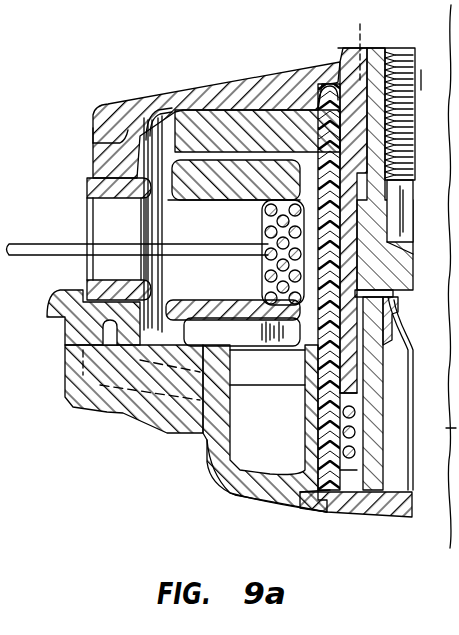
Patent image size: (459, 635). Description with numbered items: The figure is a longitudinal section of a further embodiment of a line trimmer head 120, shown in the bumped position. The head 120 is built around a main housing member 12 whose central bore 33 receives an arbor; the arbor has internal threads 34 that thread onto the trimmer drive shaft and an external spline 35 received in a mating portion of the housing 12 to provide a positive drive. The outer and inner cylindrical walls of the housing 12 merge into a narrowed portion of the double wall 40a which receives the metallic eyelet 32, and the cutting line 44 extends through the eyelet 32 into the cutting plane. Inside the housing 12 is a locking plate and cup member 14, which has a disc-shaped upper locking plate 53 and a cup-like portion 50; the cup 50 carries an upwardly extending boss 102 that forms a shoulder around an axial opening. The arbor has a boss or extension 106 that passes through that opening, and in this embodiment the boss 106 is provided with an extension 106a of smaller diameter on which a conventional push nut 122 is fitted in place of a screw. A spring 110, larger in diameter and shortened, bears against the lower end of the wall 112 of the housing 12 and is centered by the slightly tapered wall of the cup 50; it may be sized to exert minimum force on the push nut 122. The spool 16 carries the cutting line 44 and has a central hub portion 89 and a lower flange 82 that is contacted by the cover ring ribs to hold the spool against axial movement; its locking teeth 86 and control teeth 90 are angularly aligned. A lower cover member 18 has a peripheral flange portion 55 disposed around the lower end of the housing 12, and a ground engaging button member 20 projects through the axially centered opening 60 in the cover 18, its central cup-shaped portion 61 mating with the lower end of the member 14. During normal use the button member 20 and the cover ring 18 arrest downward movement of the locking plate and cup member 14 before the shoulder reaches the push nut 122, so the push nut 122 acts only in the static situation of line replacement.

The head 120 is at (159, 70).
The main housing member 12 is at (250, 86).
The locking plate and cup member 14 is at (292, 102).
The upper locking plate 53 is at (223, 97).
The narrowed portion of the double wall 40a is at (110, 143).
The eyelet 32 is at (116, 200).
The cutting line 44 is at (60, 257).
The spool 16 is at (202, 204).
The locking teeth 86 is at (212, 200).
The lower flange 82 is at (206, 300).
The central hub portion 89 is at (304, 270).
The control teeth 90 is at (240, 330).
The peripheral flange portion 55 is at (64, 348).
The lower cover member 18 is at (105, 412).
The opening 60 is at (213, 442).
The central cup-shaped portion 61 is at (302, 466).
The cup-like portion 50 is at (332, 407).
The ground engaging button member 20 is at (230, 490).
The boss 102 is at (371, 512).
The spring 110 is at (346, 511).
The wall 112 is at (385, 273).
The central bore 33 is at (407, 88).
The external spline 35 is at (360, 34).
The internal threads 34 is at (421, 72).
The extension 106 is at (414, 305).
The extension 106a is at (389, 378).
The push nut 122 is at (413, 428).